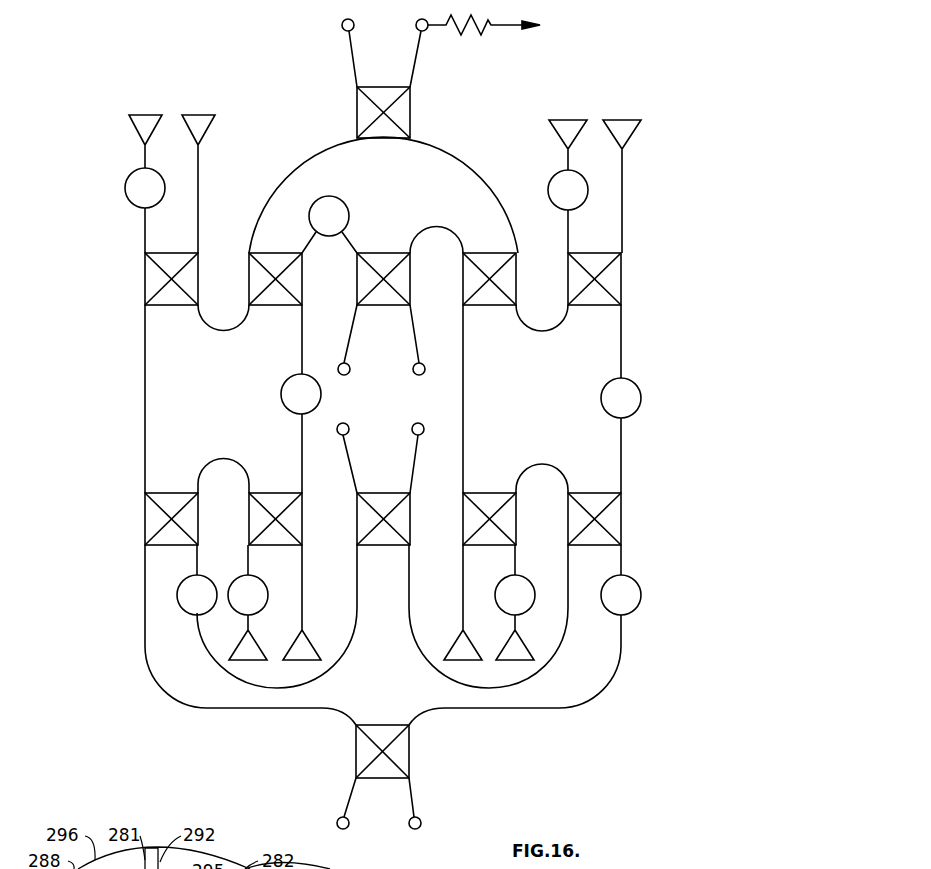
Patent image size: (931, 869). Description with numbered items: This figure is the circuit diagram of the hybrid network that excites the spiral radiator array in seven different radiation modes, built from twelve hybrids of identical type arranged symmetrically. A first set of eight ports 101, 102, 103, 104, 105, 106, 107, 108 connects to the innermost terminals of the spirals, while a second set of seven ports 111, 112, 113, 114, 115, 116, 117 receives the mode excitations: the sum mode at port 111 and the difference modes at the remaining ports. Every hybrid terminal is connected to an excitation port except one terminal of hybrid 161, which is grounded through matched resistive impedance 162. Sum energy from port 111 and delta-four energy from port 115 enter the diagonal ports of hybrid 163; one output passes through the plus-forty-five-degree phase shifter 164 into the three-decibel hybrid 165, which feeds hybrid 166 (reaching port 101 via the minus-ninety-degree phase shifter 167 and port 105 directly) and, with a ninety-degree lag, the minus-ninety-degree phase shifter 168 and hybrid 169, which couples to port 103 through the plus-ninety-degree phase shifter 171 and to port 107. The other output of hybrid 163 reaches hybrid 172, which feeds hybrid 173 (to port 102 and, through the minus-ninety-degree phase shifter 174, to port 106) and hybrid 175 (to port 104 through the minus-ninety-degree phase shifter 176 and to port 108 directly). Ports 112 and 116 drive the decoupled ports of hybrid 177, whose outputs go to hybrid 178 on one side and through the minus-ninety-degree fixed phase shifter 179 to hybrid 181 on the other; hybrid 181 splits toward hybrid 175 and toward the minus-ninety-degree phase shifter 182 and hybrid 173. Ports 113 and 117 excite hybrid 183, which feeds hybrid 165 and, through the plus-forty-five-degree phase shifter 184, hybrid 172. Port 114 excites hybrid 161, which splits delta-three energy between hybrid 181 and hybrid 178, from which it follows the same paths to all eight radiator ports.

The port 101 is at (514, 652).
The port 102 is at (304, 650).
The port 103 is at (559, 132).
The port 104 is at (134, 128).
The port 105 is at (456, 648).
The port 106 is at (249, 652).
The port 107 is at (632, 133).
The port 108 is at (213, 126).
The sum mode port 111 is at (340, 818).
The port 112 is at (339, 365).
The port 113 is at (347, 424).
The port 114 is at (342, 25).
The port 115 is at (421, 820).
The port 116 is at (425, 366).
The port 117 is at (420, 424).
The hybrid 161 is at (410, 122).
The matched resistive impedance 162 is at (476, 30).
The hybrid 163 is at (409, 753).
The +45° phase shifter 164 is at (637, 589).
The 3 db hybrid 165 is at (622, 528).
The hybrid 166 is at (516, 530).
The -90° phase shifter 167 is at (509, 581).
The -90° phase shifter 168 is at (641, 400).
The hybrid 169 is at (622, 290).
The +90° phase shifter 171 is at (549, 187).
The hybrid 172 is at (146, 528).
The hybrid 173 is at (296, 531).
The -90° phase shifter 174 is at (262, 585).
The hybrid 175 is at (146, 280).
The -90° phase shifter 176 is at (126, 193).
The hybrid 177 is at (404, 286).
The hybrid 178 is at (482, 302).
The -90° fixed phase shifter 179 is at (349, 216).
The hybrid 181 is at (273, 298).
The -90° phase shifter 182 is at (281, 394).
The hybrid 183 is at (387, 547).
The +45° phase shifter 184 is at (183, 583).